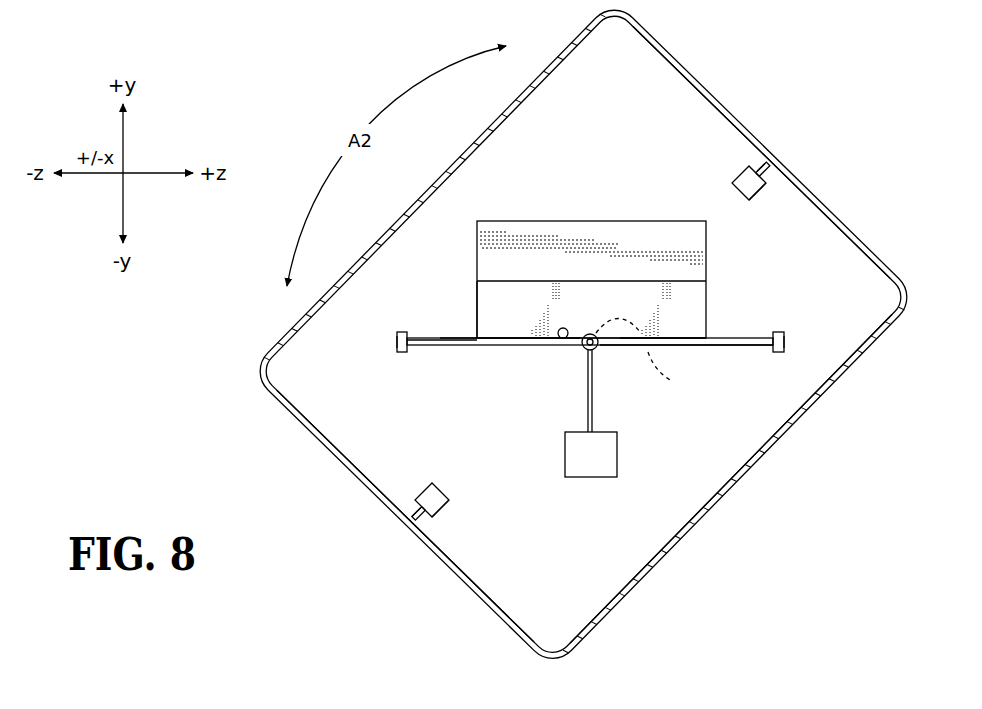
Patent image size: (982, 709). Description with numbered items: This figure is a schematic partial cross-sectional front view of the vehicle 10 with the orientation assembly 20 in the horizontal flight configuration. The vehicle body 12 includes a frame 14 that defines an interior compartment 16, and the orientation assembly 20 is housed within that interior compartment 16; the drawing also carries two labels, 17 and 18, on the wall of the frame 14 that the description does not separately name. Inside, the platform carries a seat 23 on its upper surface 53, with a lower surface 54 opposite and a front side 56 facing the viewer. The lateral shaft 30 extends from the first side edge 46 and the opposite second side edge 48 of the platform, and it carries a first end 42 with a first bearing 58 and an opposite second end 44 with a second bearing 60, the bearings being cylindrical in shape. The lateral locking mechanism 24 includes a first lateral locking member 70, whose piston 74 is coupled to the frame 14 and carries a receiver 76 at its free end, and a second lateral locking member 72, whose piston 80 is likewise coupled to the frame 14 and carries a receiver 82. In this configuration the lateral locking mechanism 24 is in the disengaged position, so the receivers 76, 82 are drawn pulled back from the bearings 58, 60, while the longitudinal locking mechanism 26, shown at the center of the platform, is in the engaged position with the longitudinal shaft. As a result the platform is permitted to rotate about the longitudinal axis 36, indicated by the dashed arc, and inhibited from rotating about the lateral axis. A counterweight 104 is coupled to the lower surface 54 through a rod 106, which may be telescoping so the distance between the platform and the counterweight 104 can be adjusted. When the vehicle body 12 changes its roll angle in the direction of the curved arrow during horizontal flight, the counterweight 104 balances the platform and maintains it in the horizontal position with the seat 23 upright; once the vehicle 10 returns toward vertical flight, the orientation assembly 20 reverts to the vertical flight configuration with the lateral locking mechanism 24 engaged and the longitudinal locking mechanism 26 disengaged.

The vehicle 10 is at (708, 55).
The vehicle body 12 is at (750, 132).
The frame 14 is at (820, 392).
The interior compartment 16 is at (680, 493).
The tread wall 17 is at (755, 470).
The outer wall 18 is at (450, 160).
The orientation assembly 20 is at (415, 306).
The seat 23 is at (587, 218).
The lateral locking mechanism 24 is at (579, 318).
The longitudinal locking mechanism 26 is at (599, 356).
The lateral shaft 30 is at (436, 356).
The longitudinal axis 36 is at (648, 356).
The first end 42 is at (419, 332).
The second end 44 is at (778, 332).
The first side edge 46 is at (475, 340).
The second side edge 48 is at (710, 346).
The upper surface 53 is at (563, 338).
The lower surface 54 is at (508, 346).
The front side 56 is at (680, 338).
The first bearing 58 is at (396, 338).
The second bearing 60 is at (786, 344).
The first lateral locking member 70 is at (440, 488).
The second lateral locking member 72 is at (746, 160).
The piston 74 is at (410, 512).
The receiver 76 is at (448, 508).
The piston 80 is at (762, 160).
The receiver 82 is at (742, 200).
The counterweight 104 is at (586, 478).
The rod 106 is at (587, 415).